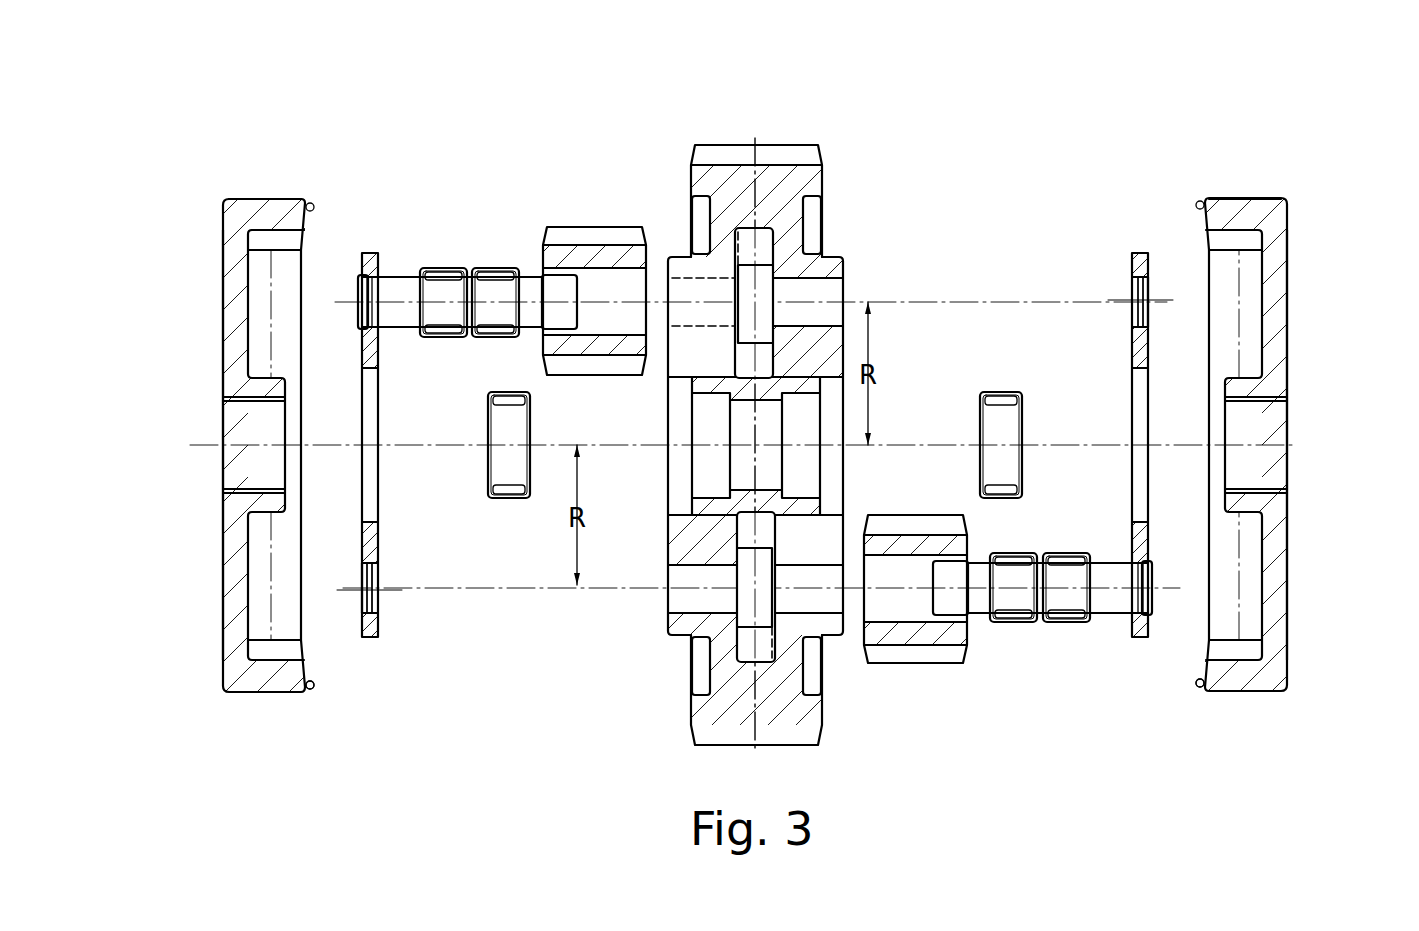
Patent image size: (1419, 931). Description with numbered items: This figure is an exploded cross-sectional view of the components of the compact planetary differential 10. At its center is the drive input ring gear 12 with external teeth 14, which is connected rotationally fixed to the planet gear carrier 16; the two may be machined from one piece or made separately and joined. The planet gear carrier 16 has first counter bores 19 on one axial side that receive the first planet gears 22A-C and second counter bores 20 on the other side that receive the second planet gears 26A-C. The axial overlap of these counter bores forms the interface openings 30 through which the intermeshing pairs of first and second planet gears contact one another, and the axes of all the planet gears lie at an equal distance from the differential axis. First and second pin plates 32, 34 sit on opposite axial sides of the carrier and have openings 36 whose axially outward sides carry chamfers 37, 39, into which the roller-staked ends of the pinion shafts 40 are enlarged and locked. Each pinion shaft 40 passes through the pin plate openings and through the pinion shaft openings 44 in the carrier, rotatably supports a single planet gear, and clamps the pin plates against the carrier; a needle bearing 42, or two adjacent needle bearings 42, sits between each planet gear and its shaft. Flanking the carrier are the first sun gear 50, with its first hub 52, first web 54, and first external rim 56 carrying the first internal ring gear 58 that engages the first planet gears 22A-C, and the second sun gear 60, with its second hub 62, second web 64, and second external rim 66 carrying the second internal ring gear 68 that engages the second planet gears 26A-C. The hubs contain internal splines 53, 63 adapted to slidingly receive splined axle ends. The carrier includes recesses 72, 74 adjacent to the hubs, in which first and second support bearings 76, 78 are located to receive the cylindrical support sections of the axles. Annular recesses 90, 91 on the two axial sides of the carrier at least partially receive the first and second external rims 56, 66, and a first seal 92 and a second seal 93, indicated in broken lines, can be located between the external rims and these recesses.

The compact planetary differential 10 is at (1090, 148).
The drive input ring gear 12 is at (759, 401).
The external teeth 14 is at (770, 155).
The planet gear carrier 16 is at (795, 222).
The first counter bores 19 is at (727, 235).
The second counter bores 20 is at (800, 525).
The first planet gears 22A-C is at (592, 228).
The second planet gears 26A-C is at (926, 664).
The interface openings 30 is at (760, 278).
The first pin plate 32 is at (363, 257).
The second pin plate 34 is at (1138, 640).
The openings 36 is at (377, 602).
The chamfers 37 is at (368, 600).
The chamfers 39 is at (1143, 283).
The pinion shafts 40 is at (400, 277).
The needle bearing 42 is at (428, 268).
The pinion shaft openings 44 is at (808, 280).
The first sun gear 50 is at (258, 199).
The first hub 52 is at (262, 388).
The internal splines 53 is at (257, 485).
The first web 54 is at (240, 315).
The first external rim 56 is at (238, 220).
The first internal ring gear 58 is at (290, 243).
The second sun gear 60 is at (1270, 198).
The second hub 62 is at (1258, 385).
The internal splines 63 is at (1260, 488).
The second web 64 is at (1270, 302).
The second external rim 66 is at (1225, 207).
The second internal ring gear 68 is at (1240, 243).
The recess 72 is at (710, 490).
The recess 74 is at (805, 495).
The first support bearing 76 is at (508, 500).
The second support bearing 78 is at (1001, 390).
The annular recess 90 is at (696, 668).
The annular recess 91 is at (810, 670).
The first seal 92 is at (313, 687).
The second seal 93 is at (1200, 690).